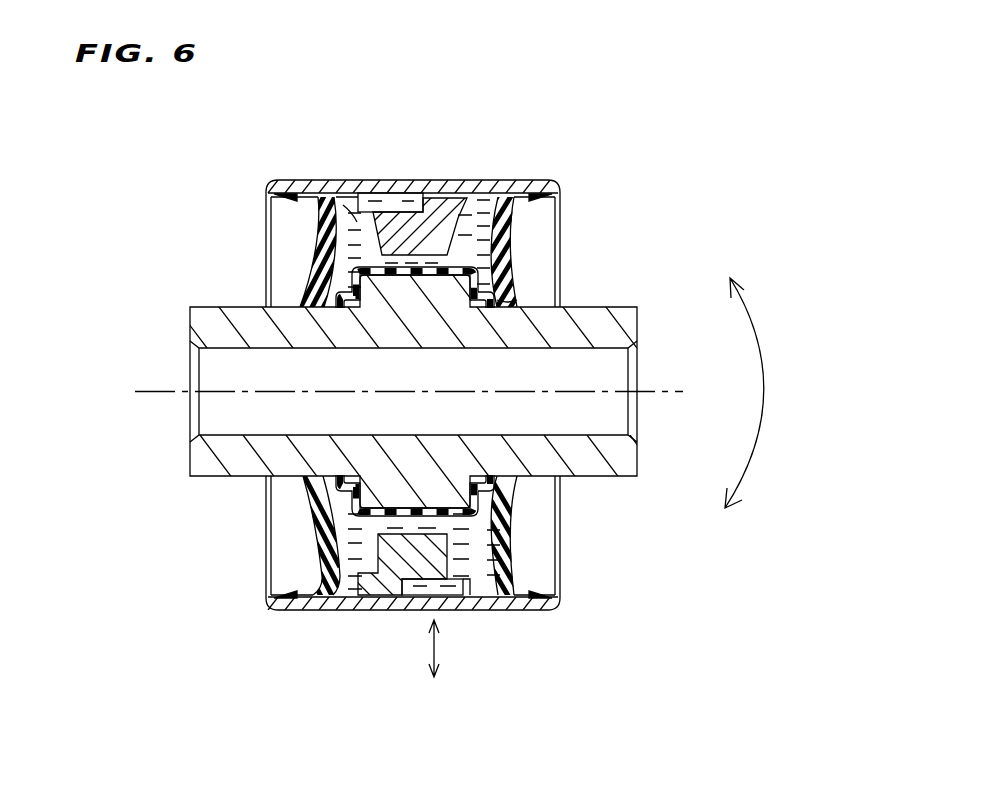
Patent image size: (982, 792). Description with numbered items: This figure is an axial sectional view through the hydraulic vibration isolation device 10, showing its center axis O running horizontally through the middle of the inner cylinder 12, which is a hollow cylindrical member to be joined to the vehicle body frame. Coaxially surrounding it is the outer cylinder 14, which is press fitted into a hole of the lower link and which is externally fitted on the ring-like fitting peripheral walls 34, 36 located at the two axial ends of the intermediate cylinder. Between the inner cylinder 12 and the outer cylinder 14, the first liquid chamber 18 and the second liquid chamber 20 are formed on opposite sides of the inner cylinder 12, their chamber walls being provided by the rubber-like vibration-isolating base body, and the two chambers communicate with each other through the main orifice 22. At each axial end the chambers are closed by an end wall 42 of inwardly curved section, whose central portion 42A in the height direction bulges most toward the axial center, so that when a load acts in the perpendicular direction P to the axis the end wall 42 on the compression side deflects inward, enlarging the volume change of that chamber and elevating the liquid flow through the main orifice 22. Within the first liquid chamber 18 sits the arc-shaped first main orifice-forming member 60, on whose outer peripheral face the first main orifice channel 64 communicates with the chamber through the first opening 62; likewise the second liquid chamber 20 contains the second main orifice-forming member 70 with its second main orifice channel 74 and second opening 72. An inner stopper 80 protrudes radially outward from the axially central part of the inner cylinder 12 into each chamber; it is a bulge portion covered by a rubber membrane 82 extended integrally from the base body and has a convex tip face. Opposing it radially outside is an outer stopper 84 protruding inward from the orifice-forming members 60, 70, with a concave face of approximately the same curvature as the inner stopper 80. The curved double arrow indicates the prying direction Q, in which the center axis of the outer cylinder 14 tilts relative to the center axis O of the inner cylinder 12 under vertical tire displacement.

The hydraulic vibration isolation device 10 is at (366, 89).
The inner cylinder 12 is at (213, 328).
The outer cylinder 14 is at (497, 182).
The first liquid chamber 18 is at (518, 275).
The second liquid chamber 20 is at (468, 564).
The main orifice 22 is at (403, 200).
The first fitting peripheral wall 34 is at (290, 192).
The second fitting peripheral wall 36 is at (545, 183).
The end wall 42 is at (330, 262).
The central portion 42A is at (340, 521).
The first main orifice-forming member 60 is at (437, 205).
The first opening 62 is at (352, 196).
The first main orifice channel 64 is at (390, 196).
The second main orifice-forming member 70 is at (357, 600).
The second opening 72 is at (467, 585).
The second main orifice channel 74 is at (420, 590).
The inner stopper 80 is at (352, 300).
The rubber membrane 82 is at (440, 537).
The outer stopper 84 is at (512, 222).
The center axis O is at (119, 392).
The perpendicular direction P is at (443, 648).
The prying direction Q is at (765, 390).